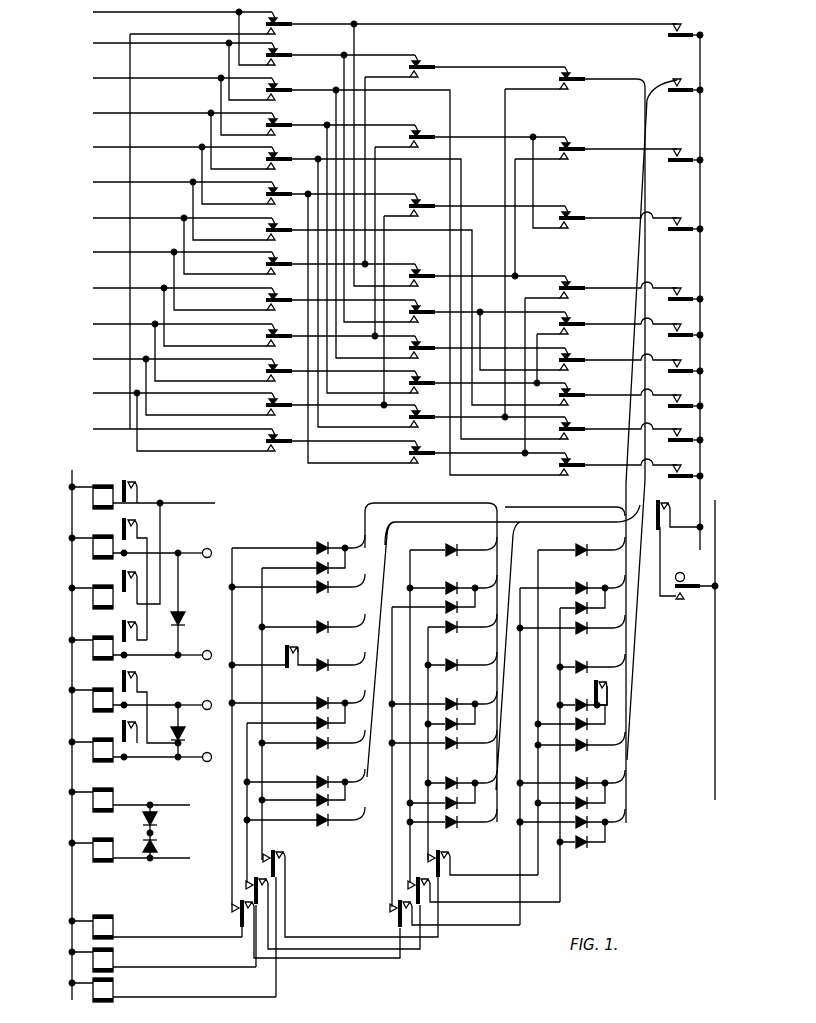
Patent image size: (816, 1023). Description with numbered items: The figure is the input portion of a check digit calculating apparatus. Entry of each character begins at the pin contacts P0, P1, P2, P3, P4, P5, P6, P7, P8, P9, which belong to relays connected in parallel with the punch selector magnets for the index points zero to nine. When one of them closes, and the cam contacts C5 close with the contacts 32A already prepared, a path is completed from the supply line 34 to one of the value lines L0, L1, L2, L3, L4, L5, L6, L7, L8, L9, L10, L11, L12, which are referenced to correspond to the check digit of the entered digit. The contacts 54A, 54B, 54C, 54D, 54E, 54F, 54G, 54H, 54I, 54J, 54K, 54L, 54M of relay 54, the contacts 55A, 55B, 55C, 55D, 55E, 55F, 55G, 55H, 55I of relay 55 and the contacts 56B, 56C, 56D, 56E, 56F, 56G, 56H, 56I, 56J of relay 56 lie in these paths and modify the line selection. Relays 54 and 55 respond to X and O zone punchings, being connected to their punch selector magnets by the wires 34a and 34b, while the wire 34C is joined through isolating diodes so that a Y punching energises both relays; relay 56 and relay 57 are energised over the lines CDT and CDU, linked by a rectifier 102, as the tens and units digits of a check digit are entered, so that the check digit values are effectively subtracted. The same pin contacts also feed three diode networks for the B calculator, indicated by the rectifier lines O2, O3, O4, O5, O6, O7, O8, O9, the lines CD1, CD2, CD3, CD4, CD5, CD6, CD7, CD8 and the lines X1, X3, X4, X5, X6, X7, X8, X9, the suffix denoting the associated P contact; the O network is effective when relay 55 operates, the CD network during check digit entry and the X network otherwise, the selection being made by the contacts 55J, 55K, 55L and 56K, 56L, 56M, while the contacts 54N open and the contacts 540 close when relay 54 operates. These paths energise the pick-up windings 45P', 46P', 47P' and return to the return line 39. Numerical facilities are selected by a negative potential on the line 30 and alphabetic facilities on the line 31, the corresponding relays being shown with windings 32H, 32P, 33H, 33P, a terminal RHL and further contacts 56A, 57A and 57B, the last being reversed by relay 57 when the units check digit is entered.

The value line L0 is at (136, 12).
The one value line L1 is at (122, 43).
The value line L2 is at (122, 78).
The value line L3 is at (122, 113).
The value line L4 is at (122, 147).
The value line L5 is at (122, 182).
The value line L6 is at (122, 218).
The value line L7 is at (122, 252).
The value line L8 is at (122, 288).
The value line L9 is at (122, 324).
The value line L10 is at (128, 359).
The value line L11 is at (128, 393).
The twelve value line L12 is at (128, 429).
The relay contacts 54A is at (278, 17).
The relay contacts 54B is at (276, 52).
The relay contacts 54C is at (276, 87).
The relay contacts 54D is at (276, 122).
The relay contacts 54E is at (276, 156).
The relay contacts 54F is at (276, 191).
The relay contacts 54G is at (276, 227).
The relay contacts 54H is at (276, 261).
The relay contacts 54I is at (276, 297).
The relay contacts 54J is at (276, 333).
The relay contacts 54K is at (276, 368).
The relay contacts 54L is at (276, 402).
The relay contacts 54M is at (276, 438).
The relay contacts 54N is at (290, 645).
The relay contacts 55A is at (424, 50).
The relay contacts 55B is at (424, 120).
The relay contacts 55C is at (424, 189).
The relay contacts 55D is at (424, 260).
The relay contacts 55E is at (418, 309).
The relay contacts 55F is at (418, 345).
The relay contacts 55G is at (418, 380).
The relay contacts 55H is at (418, 414).
The relay contacts 55I is at (418, 450).
The relay contacts 55J is at (276, 853).
The relay contacts 55K is at (268, 895).
The relay contacts 55L is at (231, 907).
The relay contacts 56B is at (568, 72).
The relay contacts 56C is at (568, 142).
The relay contacts 56D is at (569, 211).
The relay contacts 56E is at (569, 281).
The relay contacts 56F is at (569, 320).
The relay contacts 56G is at (569, 356).
The relay contacts 56H is at (569, 391).
The relay contacts 56I is at (569, 425).
The relay contacts 56J is at (569, 461).
The relay contacts 56K is at (436, 853).
The relay contacts 56L is at (432, 890).
The relay contacts 56M is at (394, 915).
The pin contacts P0 is at (688, 35).
The pin contacts P1 is at (688, 423).
The pin contacts P2 is at (688, 354).
The pin contacts P3 is at (688, 282).
The pin contacts P4 is at (686, 207).
The pin contacts P5 is at (686, 138).
The pin contacts P6 is at (680, 70).
The pin contacts P7 is at (688, 459).
The pin contacts P8 is at (688, 389).
The pin contacts P9 is at (688, 318).
The relay contacts 32A is at (666, 510).
The cam contacts C5 is at (682, 572).
The supply line 34 is at (714, 752).
The return line 39 is at (72, 482).
The relay contacts 57B is at (218, 503).
The relay coil 32H is at (111, 538).
The relay coil 32P is at (115, 571).
The relay coil 33H is at (93, 586).
The relay coil 33P is at (93, 646).
The line 30 is at (207, 548).
The line 31 is at (207, 650).
The terminal RHL is at (207, 660).
The relay 56 is at (101, 688).
The relay contact 56A is at (137, 684).
The relay 57 is at (101, 738).
The relay contact 57A is at (128, 740).
The diode 102 is at (175, 742).
The check digit tens line CDT is at (207, 710).
The check digit units line CDU is at (207, 762).
The relay 54 is at (113, 801).
The relay 55 is at (113, 862).
The wire 34a is at (180, 815).
The wire 34b is at (166, 858).
The wire 34C is at (160, 833).
The pick-up winding 45P' is at (167, 919).
The pick-up winding 46P' is at (174, 958).
The pick-up winding 47P' is at (184, 988).
The rectifier line O2 is at (336, 738).
The rectifier line O3 is at (336, 659).
The rectifier line O4 is at (336, 621).
The rectifier line O5 is at (336, 581).
The rectifier line O6 is at (335, 548).
The rectifier line O7 is at (336, 814).
The rectifier line O8 is at (336, 784).
The rectifier line O9 is at (336, 706).
The rectifier line CD1 is at (452, 782).
The rectifier line CD2 is at (452, 703).
The rectifier line CD3 is at (452, 665).
The rectifier line CD4 is at (452, 626).
The rectifier line CD5 is at (452, 586).
The rectifier line CD6 is at (452, 547).
The rectifier line CD7 is at (450, 820).
The rectifier line CD8 is at (450, 741).
The rectifier line X1 is at (583, 782).
The rectifier line X3 is at (583, 666).
The rectifier line X4 is at (583, 627).
The rectifier line X5 is at (583, 587).
The rectifier line X6 is at (583, 547).
The rectifier line X7 is at (583, 821).
The rectifier line X8 is at (583, 744).
The rectifier line X9 is at (608, 686).
The relay contacts 540 is at (594, 692).